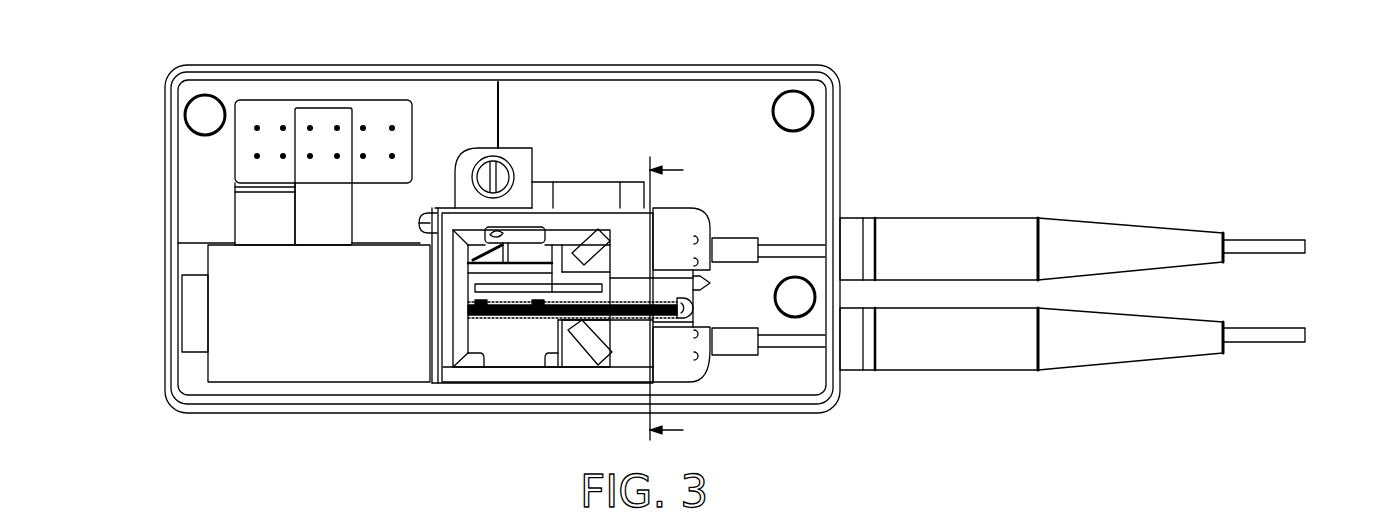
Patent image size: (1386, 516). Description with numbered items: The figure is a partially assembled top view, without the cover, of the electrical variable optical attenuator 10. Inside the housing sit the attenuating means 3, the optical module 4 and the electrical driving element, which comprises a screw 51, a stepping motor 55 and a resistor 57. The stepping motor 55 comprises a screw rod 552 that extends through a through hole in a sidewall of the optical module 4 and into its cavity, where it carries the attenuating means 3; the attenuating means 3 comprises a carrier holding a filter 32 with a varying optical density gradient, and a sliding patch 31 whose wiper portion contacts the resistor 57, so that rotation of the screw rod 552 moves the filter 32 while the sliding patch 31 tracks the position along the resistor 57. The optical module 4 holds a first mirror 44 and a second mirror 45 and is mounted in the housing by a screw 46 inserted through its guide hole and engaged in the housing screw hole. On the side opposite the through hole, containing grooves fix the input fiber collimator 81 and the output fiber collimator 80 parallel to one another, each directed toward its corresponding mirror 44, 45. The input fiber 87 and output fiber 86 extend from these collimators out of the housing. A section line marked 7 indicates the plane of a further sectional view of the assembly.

The electrical variable optical attenuator 10 is at (650, 239).
The attenuating means 3 is at (498, 300).
The optical module 4 is at (588, 182).
The section line 7 is at (667, 301).
The sliding patch 31 is at (495, 247).
The filter 32 is at (558, 352).
The first mirror 44 is at (598, 253).
The second mirror 45 is at (606, 350).
The screw 46 is at (475, 168).
The screw 51 is at (422, 214).
The stepping motor 55 is at (390, 353).
The resistor 57 is at (528, 240).
The output fiber collimator 80 is at (740, 343).
The input fiber collimator 81 is at (730, 235).
The output fiber 86 is at (1262, 337).
The input fiber 87 is at (1252, 245).
The screw rod 552 is at (583, 316).